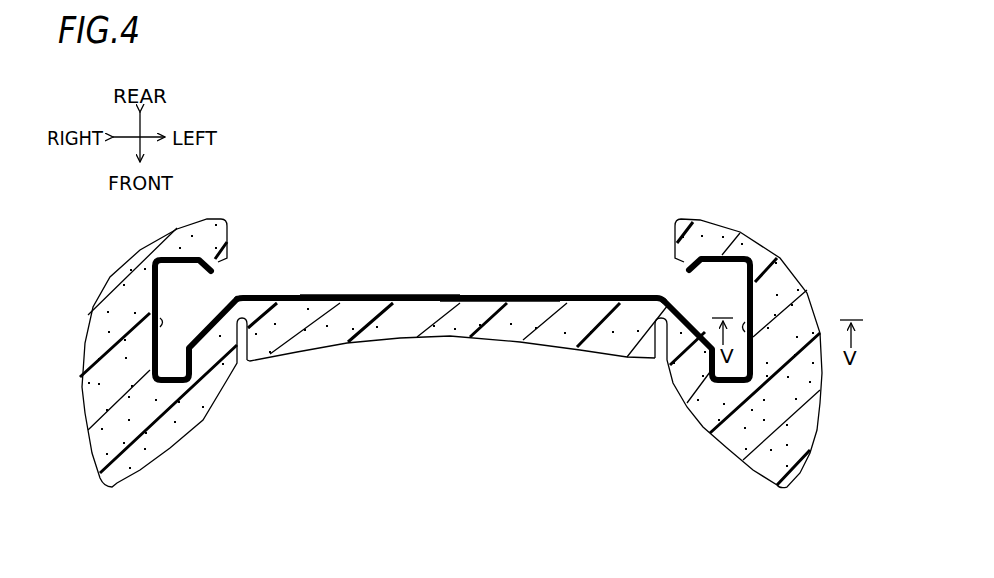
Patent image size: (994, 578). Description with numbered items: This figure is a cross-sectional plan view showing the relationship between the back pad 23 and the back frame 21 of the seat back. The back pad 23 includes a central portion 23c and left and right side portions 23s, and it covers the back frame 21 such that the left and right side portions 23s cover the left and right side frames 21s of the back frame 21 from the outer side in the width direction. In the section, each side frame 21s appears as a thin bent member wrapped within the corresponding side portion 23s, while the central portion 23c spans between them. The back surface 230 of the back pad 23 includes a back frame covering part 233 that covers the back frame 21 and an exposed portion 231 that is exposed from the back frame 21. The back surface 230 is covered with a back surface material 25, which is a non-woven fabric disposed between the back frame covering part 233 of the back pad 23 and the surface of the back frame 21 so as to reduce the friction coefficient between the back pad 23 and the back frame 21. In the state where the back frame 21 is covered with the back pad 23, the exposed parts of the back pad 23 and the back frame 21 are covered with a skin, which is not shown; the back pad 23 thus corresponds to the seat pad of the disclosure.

The back frame 21 is at (451, 307).
The side frames 21s is at (451, 307).
The back pad 23 is at (451, 376).
The central portion 23c is at (403, 330).
The side portions 23s is at (124, 442).
The back surface material 25 is at (436, 294).
The back surface 230 is at (377, 292).
The exposed portion 231 is at (484, 294).
The back frame covering part 233 is at (150, 318).